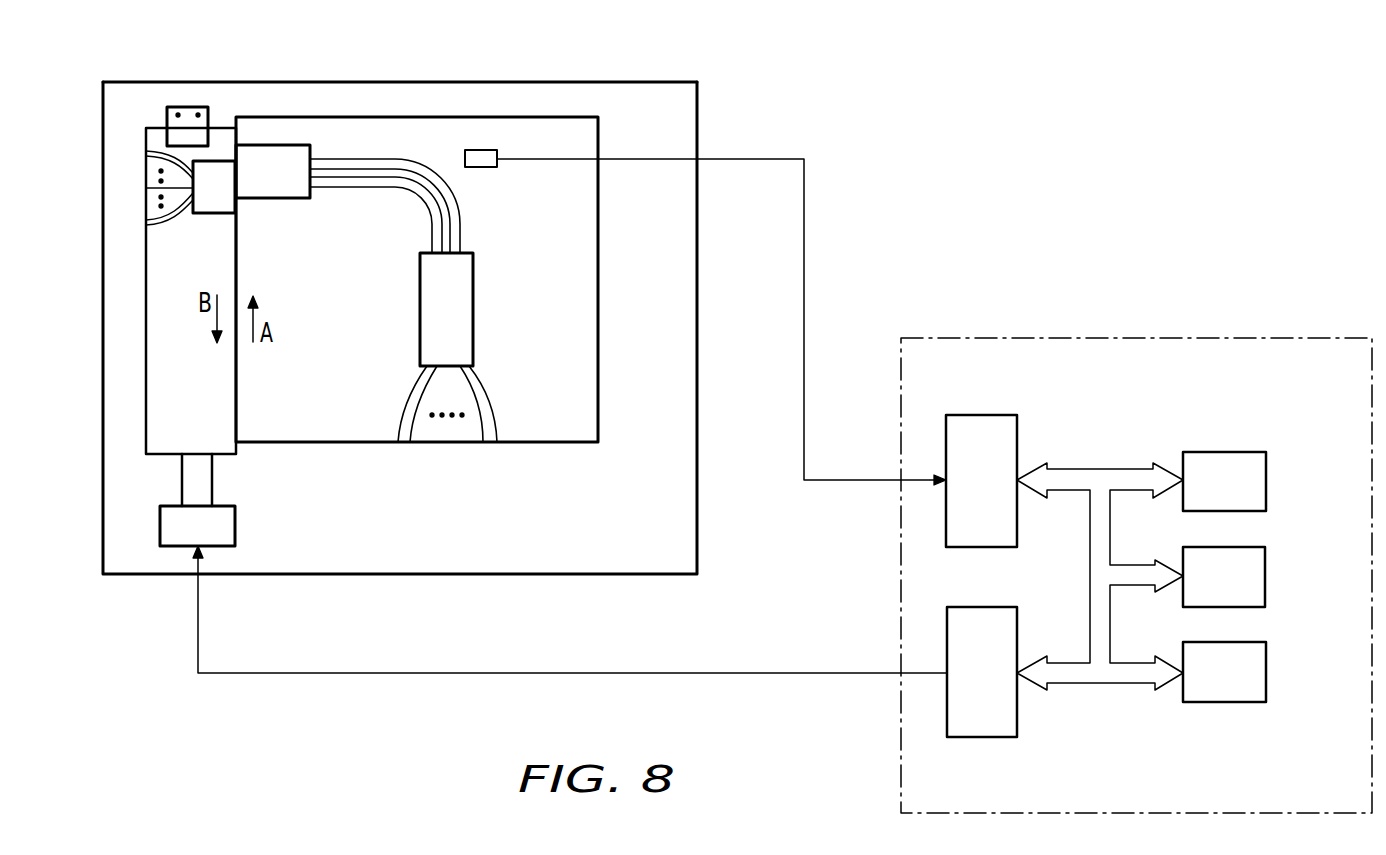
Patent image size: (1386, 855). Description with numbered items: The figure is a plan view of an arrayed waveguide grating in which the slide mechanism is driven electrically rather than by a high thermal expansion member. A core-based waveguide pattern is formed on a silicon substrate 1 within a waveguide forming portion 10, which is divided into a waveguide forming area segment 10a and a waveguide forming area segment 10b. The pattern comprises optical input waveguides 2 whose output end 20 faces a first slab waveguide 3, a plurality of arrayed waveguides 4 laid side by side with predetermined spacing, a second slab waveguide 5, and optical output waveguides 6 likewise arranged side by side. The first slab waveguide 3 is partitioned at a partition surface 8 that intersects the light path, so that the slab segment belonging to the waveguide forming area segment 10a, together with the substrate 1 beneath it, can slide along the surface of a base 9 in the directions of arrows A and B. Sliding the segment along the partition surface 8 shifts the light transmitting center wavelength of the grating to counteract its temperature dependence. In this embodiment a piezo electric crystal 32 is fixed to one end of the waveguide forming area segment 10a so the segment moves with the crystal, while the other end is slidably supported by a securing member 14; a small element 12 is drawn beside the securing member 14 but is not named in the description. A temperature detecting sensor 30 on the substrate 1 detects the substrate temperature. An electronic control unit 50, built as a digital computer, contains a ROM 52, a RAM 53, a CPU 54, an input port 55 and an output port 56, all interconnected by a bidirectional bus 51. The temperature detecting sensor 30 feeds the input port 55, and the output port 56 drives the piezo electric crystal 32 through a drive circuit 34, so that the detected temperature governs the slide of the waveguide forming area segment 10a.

The substrate 1 is at (583, 322).
The optical input waveguide 2 is at (153, 189).
The first slab waveguide 3 is at (248, 183).
The arrayed waveguides 4 is at (448, 198).
The second slab waveguide 5 is at (462, 292).
The optical output waveguides 6 is at (478, 407).
The partition surface 8 is at (228, 90).
The base 9 is at (688, 385).
The waveguide forming portion 10 is at (417, 285).
The waveguide forming area segment 10a is at (220, 395).
The waveguide forming area segment 10b is at (572, 140).
The sensor 12 is at (197, 115).
The securing member 14 is at (174, 138).
The output end of the optical input waveguide 20 is at (191, 190).
The temperature detecting sensor 30 is at (468, 150).
The piezo electric crystal 32 is at (203, 476).
The drive circuit 34 is at (223, 524).
The electronic control unit 50 is at (1183, 338).
The bidirectional bus 51 is at (1102, 683).
The ROM 52 is at (1222, 452).
The RAM 53 is at (1255, 547).
The CPU 54 is at (1225, 702).
The input port 55 is at (987, 415).
The output port 56 is at (987, 737).